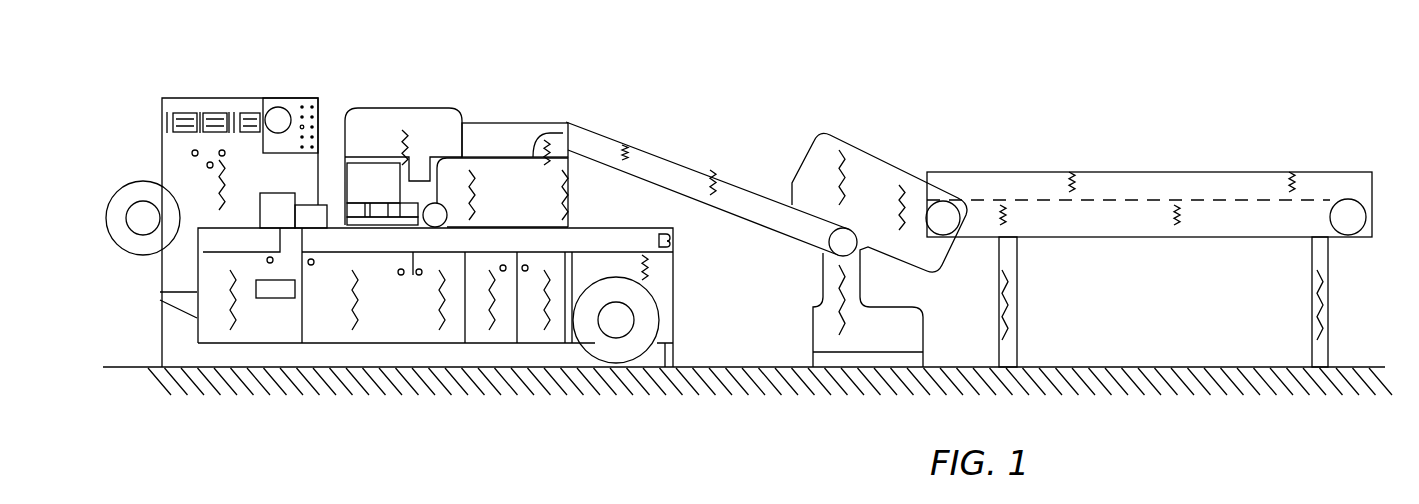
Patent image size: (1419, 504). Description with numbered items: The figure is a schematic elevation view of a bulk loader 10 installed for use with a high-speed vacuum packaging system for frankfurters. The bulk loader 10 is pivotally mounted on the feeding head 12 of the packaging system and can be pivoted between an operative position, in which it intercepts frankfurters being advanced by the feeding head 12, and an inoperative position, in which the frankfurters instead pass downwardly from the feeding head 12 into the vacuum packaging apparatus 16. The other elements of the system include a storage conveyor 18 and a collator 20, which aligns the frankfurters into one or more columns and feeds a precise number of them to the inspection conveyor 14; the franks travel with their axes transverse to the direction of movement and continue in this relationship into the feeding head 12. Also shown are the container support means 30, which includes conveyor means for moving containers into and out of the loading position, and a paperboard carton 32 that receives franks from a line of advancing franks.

The bulk loader 10 is at (360, 92).
The feeding head 12 is at (518, 203).
The inspection conveyor 14 is at (670, 160).
The vacuum packaging apparatus 16 is at (430, 332).
The storage conveyor 18 is at (1093, 198).
The collator 20 is at (893, 163).
The container support means 30 is at (340, 205).
The paperboard carton 32 is at (384, 193).